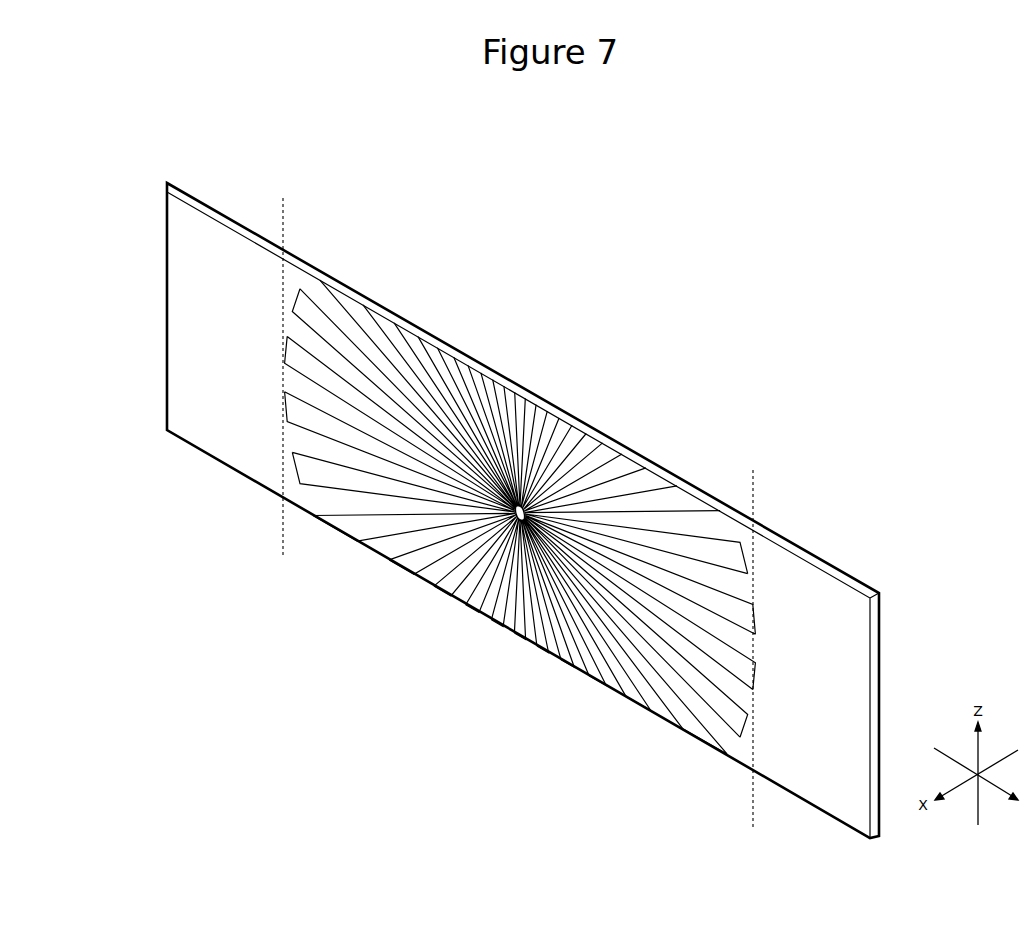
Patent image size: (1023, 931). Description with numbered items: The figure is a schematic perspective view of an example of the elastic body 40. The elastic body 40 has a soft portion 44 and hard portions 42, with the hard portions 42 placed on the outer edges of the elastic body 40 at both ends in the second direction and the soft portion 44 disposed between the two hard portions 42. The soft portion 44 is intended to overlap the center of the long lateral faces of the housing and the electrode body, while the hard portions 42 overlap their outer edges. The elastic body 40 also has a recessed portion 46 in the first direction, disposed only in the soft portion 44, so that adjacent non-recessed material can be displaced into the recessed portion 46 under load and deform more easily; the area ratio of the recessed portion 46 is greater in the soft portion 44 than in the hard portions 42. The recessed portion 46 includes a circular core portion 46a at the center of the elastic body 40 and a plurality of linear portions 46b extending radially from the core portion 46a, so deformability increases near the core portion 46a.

The elastic body 40 is at (497, 792).
The hard portions 42 is at (283, 199).
The soft portion 44 is at (753, 472).
The recessed portion 46 is at (520, 517).
The core portion 46a is at (464, 595).
The linear portions 46b is at (410, 570).